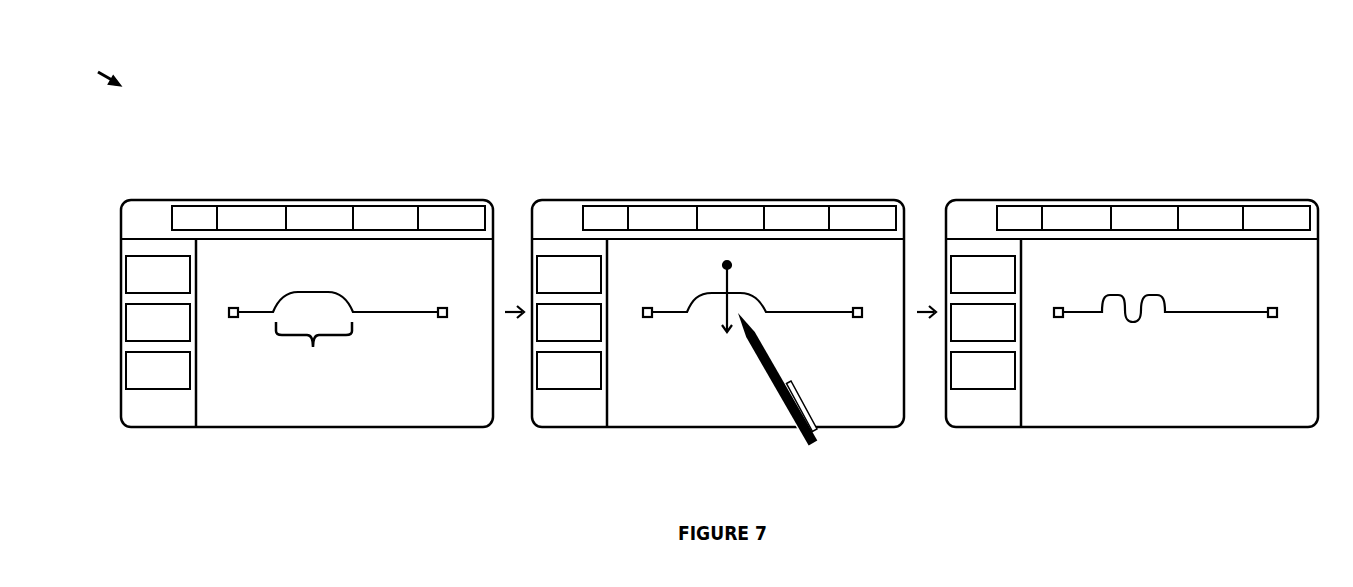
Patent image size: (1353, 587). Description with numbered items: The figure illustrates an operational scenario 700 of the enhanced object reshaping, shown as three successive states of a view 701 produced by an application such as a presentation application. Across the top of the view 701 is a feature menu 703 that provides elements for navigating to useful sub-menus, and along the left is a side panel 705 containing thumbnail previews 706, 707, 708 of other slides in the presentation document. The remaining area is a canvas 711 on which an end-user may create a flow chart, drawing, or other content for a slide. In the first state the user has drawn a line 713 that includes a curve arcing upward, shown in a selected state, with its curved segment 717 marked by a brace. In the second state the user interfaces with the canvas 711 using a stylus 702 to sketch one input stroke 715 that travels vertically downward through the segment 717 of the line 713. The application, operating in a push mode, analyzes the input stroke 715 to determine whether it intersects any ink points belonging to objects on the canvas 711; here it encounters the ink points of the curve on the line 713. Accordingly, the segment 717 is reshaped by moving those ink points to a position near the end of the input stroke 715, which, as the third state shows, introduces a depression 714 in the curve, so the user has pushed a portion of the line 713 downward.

The operational scenario 700 is at (99, 67).
The view 701 is at (270, 429).
The stylus 702 is at (805, 397).
The feature menu 703 is at (165, 230).
The side panel 705 is at (162, 416).
The thumbnail preview 706 is at (173, 284).
The thumbnail preview 707 is at (173, 332).
The thumbnail preview 708 is at (173, 380).
The canvas 711 is at (323, 416).
The line 713 is at (388, 313).
The depression 714 is at (1141, 328).
The input stroke 715 is at (735, 275).
The segment 717 is at (314, 347).